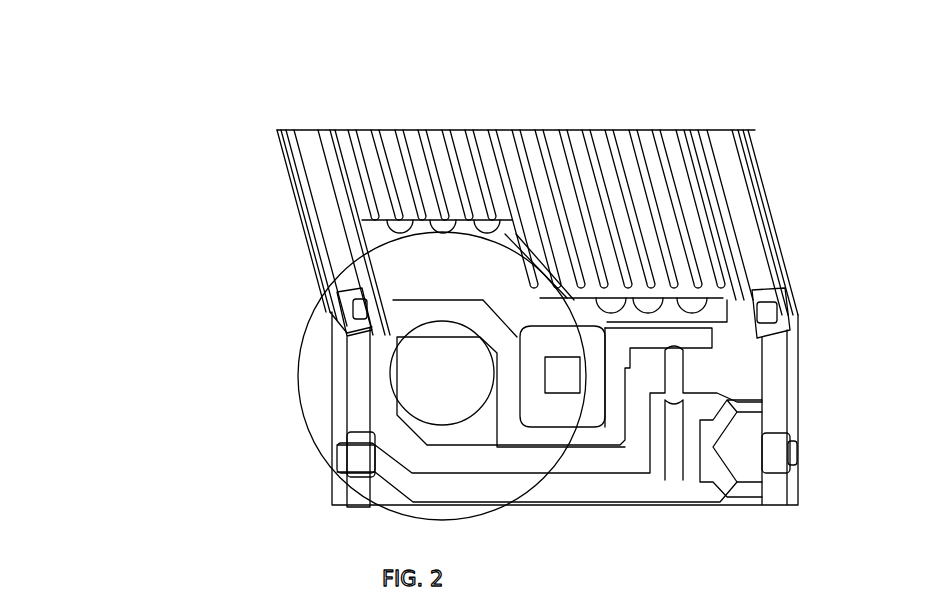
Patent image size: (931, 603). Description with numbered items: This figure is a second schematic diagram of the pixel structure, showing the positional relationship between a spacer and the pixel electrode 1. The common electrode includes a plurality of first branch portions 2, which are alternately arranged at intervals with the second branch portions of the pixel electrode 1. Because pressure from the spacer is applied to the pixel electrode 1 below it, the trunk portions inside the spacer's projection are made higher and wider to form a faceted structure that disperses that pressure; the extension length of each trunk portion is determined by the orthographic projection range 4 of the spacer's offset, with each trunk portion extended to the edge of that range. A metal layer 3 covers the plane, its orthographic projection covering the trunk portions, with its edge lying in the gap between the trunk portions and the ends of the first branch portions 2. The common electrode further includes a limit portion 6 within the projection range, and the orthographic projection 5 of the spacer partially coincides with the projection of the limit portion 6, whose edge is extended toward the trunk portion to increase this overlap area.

The pixel electrode 1 is at (418, 282).
The first branch portions 2 is at (393, 193).
The metal layer 3 is at (508, 236).
The orthographic projection range 4 is at (298, 362).
The orthographic projection of the spacer 5 is at (390, 392).
The limit portion 6 is at (420, 427).